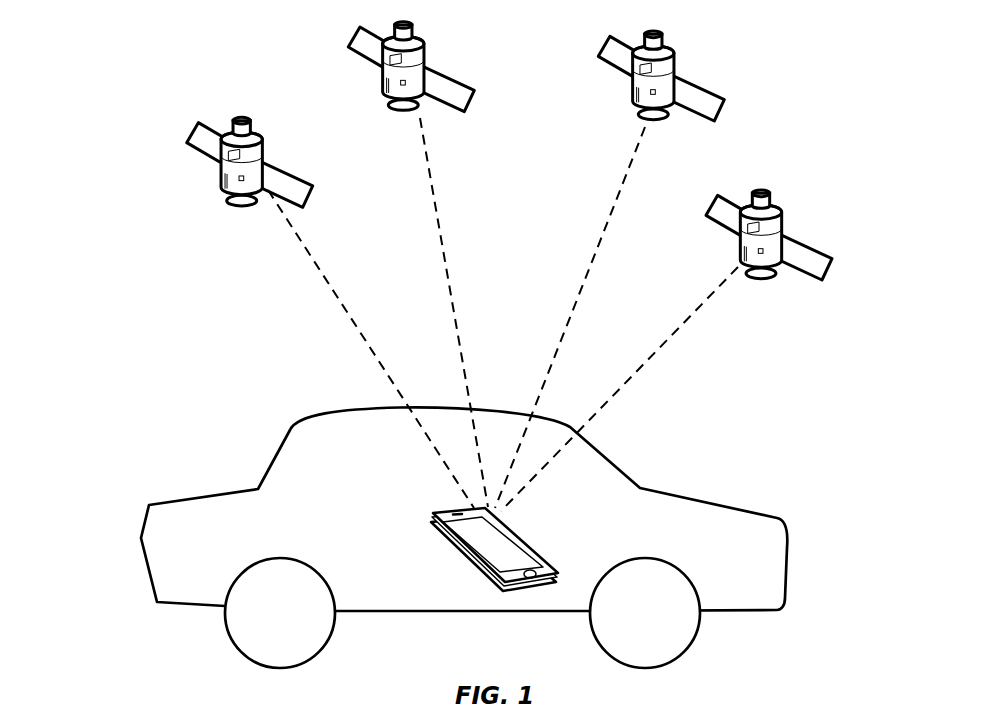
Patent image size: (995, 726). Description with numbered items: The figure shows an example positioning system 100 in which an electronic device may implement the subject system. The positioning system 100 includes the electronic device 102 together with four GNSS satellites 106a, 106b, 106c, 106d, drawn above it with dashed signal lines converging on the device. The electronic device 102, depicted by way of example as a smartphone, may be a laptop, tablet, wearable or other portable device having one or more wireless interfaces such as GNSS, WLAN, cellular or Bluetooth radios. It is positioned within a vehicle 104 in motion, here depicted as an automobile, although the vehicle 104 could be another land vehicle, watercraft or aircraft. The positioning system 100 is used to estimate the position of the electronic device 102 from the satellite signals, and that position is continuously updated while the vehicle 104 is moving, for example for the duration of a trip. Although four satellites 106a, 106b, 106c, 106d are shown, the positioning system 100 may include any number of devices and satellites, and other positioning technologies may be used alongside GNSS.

The positioning system 100 is at (87, 157).
The electronic device 102 is at (538, 590).
The vehicle 104 is at (279, 452).
The GNSS satellite 106a is at (262, 133).
The GNSS satellite 106b is at (425, 48).
The GNSS satellite 106c is at (675, 46).
The GNSS satellite 106d is at (783, 215).